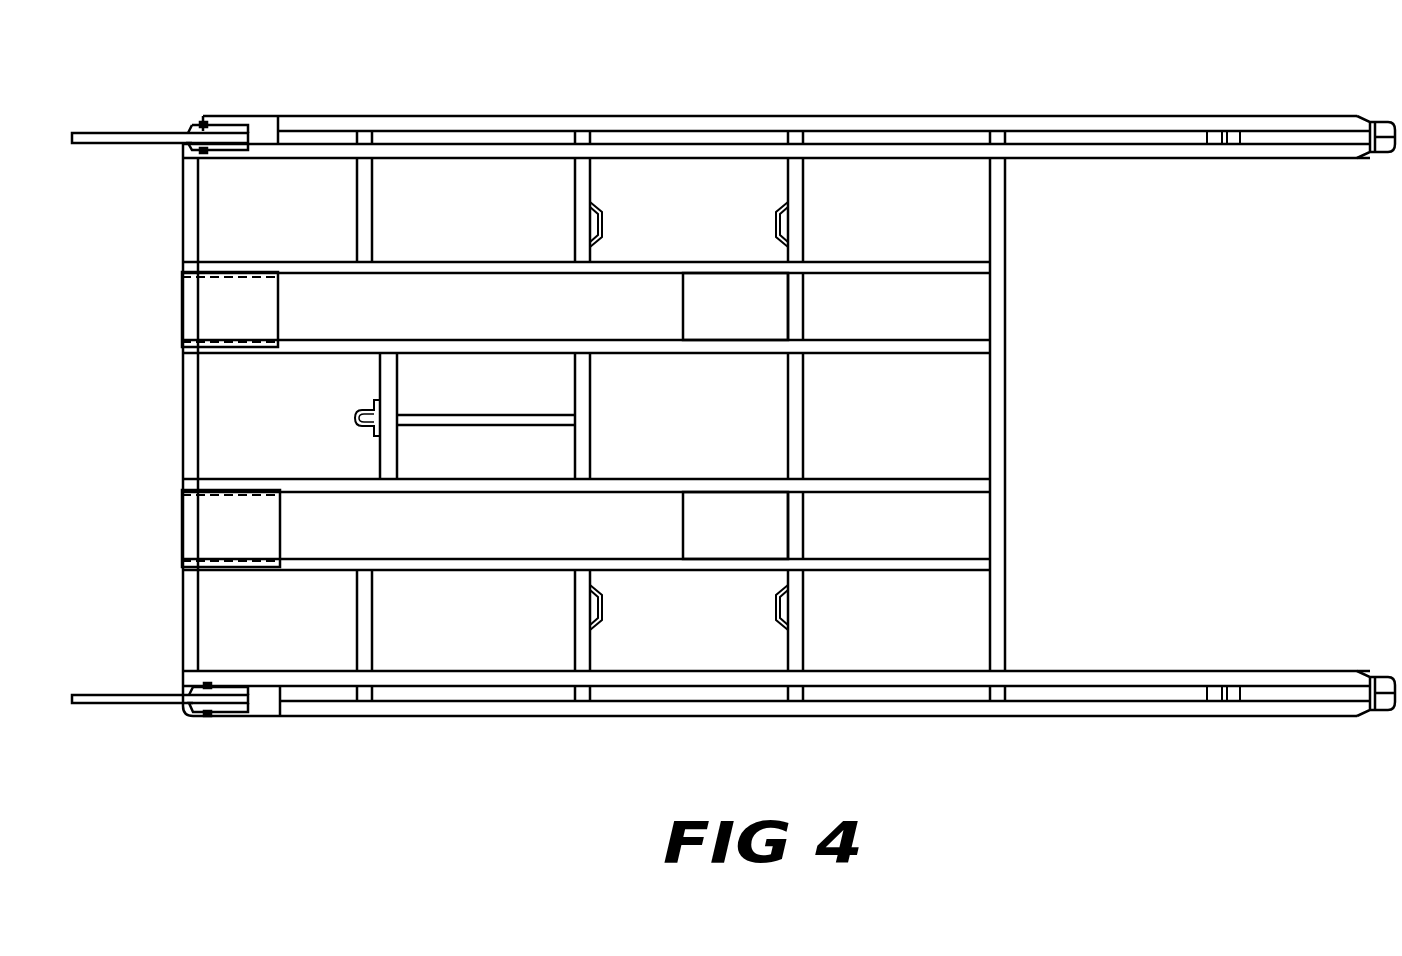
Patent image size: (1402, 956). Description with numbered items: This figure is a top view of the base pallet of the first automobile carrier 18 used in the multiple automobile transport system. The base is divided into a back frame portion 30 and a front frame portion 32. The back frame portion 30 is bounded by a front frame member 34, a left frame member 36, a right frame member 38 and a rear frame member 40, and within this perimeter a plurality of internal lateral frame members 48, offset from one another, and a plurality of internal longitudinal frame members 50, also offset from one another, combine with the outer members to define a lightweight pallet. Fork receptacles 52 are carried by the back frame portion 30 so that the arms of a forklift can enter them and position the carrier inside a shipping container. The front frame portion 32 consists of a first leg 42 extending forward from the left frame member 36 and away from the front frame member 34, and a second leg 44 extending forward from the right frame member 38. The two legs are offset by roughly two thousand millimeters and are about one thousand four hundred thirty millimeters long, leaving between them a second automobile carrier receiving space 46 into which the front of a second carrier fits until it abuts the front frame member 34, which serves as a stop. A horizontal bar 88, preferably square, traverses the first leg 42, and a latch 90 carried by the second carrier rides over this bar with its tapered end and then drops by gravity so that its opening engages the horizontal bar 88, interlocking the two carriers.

The first automobile carrier 18 is at (684, 718).
The back frame portion 30 is at (485, 718).
The front frame portion 32 is at (1076, 116).
The front frame member 34 is at (1005, 381).
The left frame member 36 is at (645, 115).
The right frame member 38 is at (833, 718).
The rear frame member 40 is at (182, 430).
The first leg 42 is at (1225, 115).
The second leg 44 is at (1140, 717).
The second automobile carrier receiving space 46 is at (1231, 423).
The internal lateral frame members 48 is at (368, 189).
The internal longitudinal frame members 50 is at (332, 265).
The fork receptacles 52 is at (756, 543).
The horizontal bar 88 is at (1228, 693).
The latch 90 is at (158, 133).